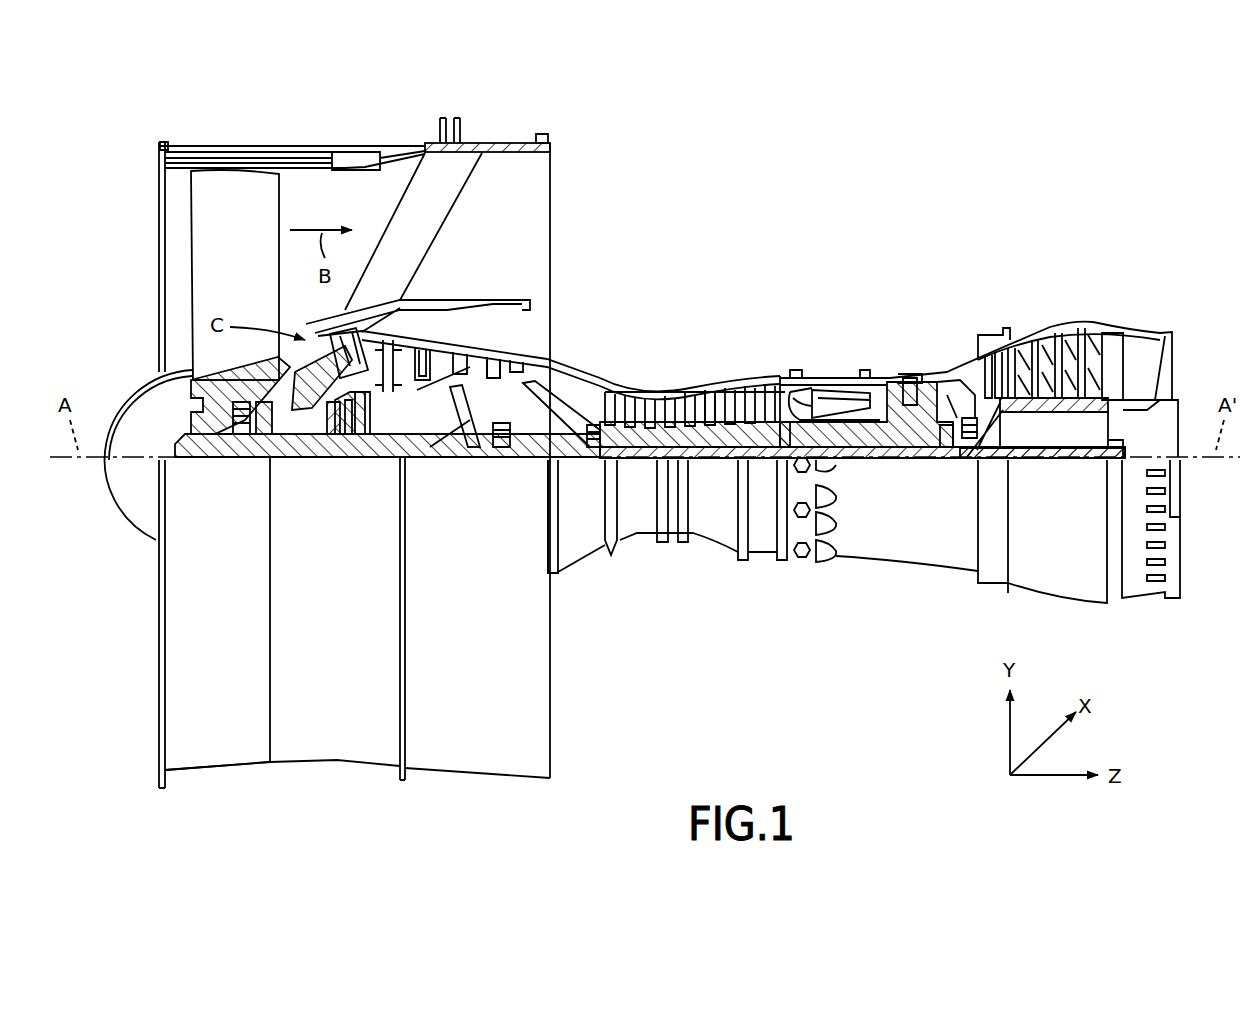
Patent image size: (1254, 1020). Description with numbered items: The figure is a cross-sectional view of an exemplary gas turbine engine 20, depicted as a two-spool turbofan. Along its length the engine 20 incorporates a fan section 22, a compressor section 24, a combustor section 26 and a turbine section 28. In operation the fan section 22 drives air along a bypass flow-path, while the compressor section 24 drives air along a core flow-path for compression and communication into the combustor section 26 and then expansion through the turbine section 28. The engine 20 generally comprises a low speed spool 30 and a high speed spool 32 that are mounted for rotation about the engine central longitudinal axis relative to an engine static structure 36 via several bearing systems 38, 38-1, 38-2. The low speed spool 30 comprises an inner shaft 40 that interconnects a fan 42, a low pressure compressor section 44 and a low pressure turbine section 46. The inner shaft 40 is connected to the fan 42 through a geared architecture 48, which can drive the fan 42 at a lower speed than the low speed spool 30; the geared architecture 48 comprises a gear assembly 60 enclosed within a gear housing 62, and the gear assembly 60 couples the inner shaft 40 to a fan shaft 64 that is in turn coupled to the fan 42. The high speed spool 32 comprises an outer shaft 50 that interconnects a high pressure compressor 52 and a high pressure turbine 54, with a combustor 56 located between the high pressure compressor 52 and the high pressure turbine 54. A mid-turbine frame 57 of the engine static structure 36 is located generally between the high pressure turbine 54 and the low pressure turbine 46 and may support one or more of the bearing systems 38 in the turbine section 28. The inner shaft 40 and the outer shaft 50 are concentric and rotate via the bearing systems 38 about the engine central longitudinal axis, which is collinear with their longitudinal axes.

The gas turbine engine 20 is at (893, 170).
The fan section 22 is at (375, 125).
The compressor section 24 is at (787, 257).
The combustor section 26 is at (890, 257).
The turbine section 28 is at (1108, 257).
The low speed spool 30 is at (722, 475).
The high speed spool 32 is at (773, 417).
The engine static structure 36 is at (333, 745).
The bearing system 38 is at (948, 462).
The bearing system 38-1 is at (245, 460).
The bearing system 38-2 is at (502, 462).
The inner shaft 40 is at (570, 460).
The fan 42 is at (234, 286).
The low pressure compressor section 44 is at (487, 352).
The low pressure turbine section 46 is at (1042, 335).
The geared architecture 48 is at (356, 482).
The outer shaft 50 is at (850, 462).
The high pressure compressor 52 is at (727, 423).
The high pressure turbine 54 is at (910, 378).
The combustor 56 is at (833, 397).
The mid-turbine frame 57 is at (957, 366).
The gear assembly 60 is at (358, 460).
The gear housing 62 is at (368, 404).
The fan shaft 64 is at (265, 460).